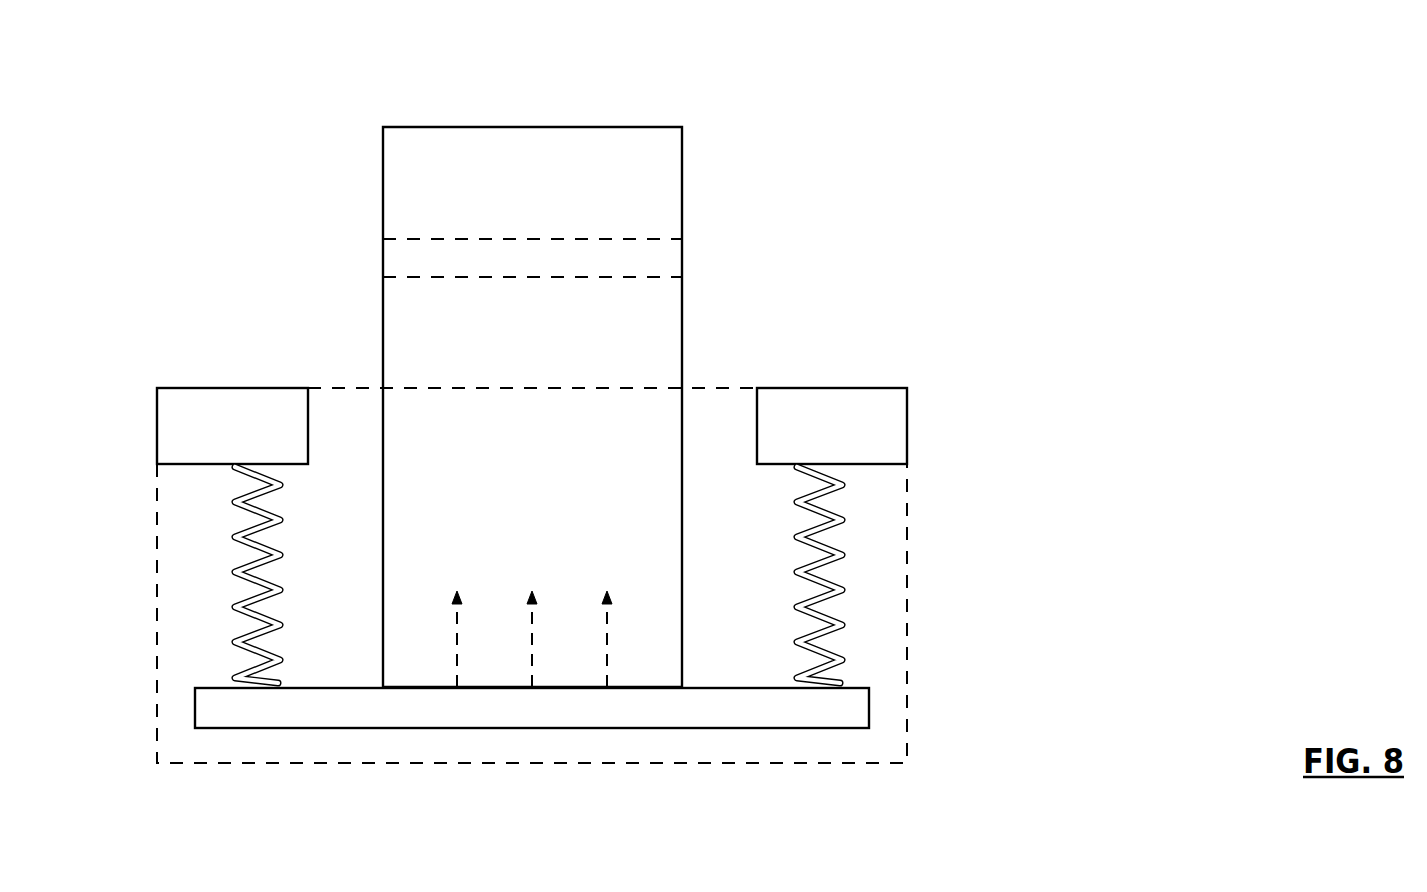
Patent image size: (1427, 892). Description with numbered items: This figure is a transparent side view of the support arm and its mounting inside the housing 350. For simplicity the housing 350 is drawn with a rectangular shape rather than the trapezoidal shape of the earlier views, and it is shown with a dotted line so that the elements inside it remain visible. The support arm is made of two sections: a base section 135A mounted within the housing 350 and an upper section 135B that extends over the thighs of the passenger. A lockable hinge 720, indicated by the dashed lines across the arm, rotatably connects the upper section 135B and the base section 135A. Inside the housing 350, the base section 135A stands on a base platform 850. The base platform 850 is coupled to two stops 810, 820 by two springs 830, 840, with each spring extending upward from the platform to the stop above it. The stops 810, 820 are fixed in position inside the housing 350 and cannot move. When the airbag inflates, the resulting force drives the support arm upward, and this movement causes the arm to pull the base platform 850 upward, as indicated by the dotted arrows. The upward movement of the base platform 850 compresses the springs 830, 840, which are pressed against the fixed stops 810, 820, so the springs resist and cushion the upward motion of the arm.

The base section 135A is at (683, 332).
The upper section 135B is at (474, 125).
The lockable hinge 720 is at (398, 257).
The housing 350 is at (907, 651).
The stop 810 is at (250, 436).
The stop 820 is at (848, 444).
The spring 830 is at (235, 578).
The spring 840 is at (833, 558).
The base platform 850 is at (738, 707).